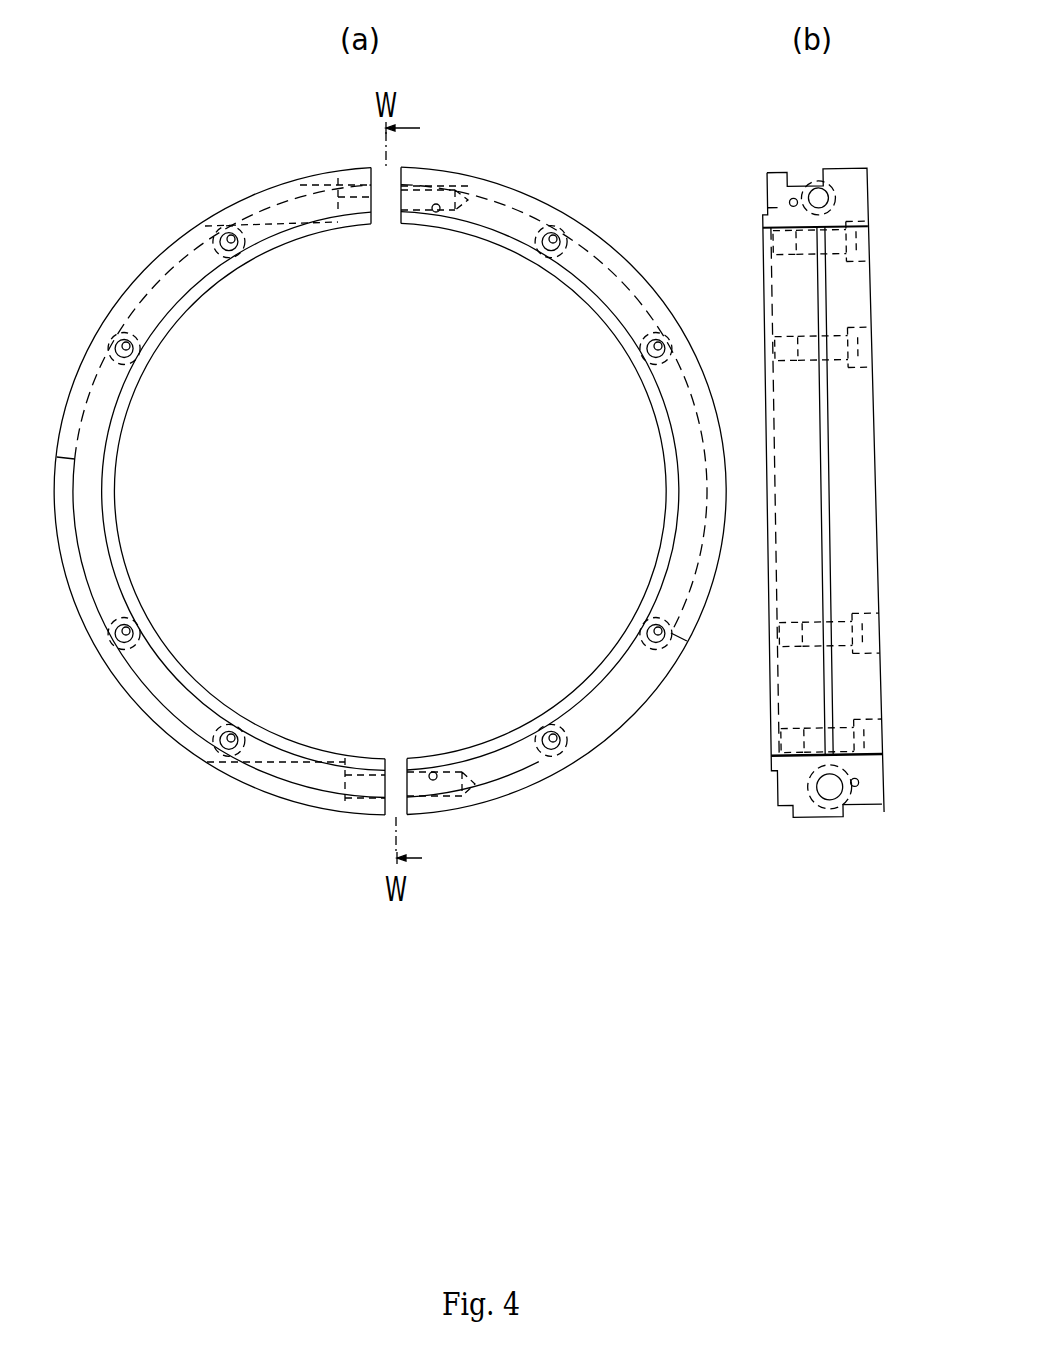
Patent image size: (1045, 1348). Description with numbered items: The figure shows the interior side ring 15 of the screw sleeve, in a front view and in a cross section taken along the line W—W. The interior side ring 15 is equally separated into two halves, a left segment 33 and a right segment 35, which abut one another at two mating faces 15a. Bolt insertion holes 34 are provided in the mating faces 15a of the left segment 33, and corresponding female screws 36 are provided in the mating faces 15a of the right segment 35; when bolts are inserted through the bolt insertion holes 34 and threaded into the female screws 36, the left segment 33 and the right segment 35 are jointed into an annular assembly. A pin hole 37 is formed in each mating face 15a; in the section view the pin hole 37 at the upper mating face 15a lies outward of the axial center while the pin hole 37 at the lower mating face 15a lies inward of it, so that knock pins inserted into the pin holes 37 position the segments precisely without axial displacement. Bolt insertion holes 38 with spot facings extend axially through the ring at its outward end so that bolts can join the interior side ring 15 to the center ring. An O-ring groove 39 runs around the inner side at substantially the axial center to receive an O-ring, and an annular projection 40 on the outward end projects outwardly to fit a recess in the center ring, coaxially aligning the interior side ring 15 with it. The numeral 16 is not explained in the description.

The interior side ring 15 is at (198, 180).
The mating face 15a is at (395, 790).
The pin hole 16 is at (818, 186).
The left segment 33 is at (166, 243).
The bolt insertion hole 34 is at (346, 765).
The right segment 35 is at (524, 188).
The female screw 36 is at (436, 765).
The pin hole 37 is at (855, 790).
The bolt insertion hole 38 is at (236, 252).
The O-ring groove 39 is at (822, 598).
The annular projection 40 is at (770, 757).